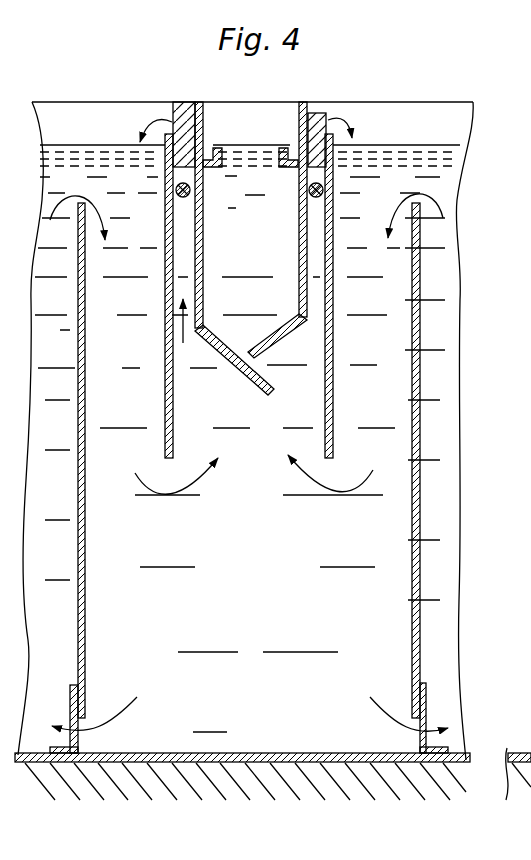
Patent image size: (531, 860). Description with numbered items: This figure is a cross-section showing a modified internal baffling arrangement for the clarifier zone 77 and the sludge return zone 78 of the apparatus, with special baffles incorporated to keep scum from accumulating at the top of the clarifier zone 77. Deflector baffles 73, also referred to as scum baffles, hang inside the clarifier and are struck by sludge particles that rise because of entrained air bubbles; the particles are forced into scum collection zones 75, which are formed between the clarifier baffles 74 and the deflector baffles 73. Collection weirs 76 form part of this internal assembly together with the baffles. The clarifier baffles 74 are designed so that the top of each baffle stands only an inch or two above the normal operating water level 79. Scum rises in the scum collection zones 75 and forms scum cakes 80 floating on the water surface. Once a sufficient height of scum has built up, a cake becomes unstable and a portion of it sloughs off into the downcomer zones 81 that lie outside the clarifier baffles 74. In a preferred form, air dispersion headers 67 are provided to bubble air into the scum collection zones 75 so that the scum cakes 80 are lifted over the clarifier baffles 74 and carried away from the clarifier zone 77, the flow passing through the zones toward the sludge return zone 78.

The air dispersion header 67 is at (180, 172).
The deflector baffle 73 is at (294, 268).
The clarifier baffle 74 is at (161, 292).
The scum collection zone 75 is at (183, 226).
The collection weir 76 is at (285, 168).
The clarifier zone 77 is at (259, 306).
The sludge return zone 78 is at (304, 623).
The normal operating water level 79 is at (62, 145).
The scum cake 80 is at (182, 125).
The downcomer zone 81 is at (136, 415).